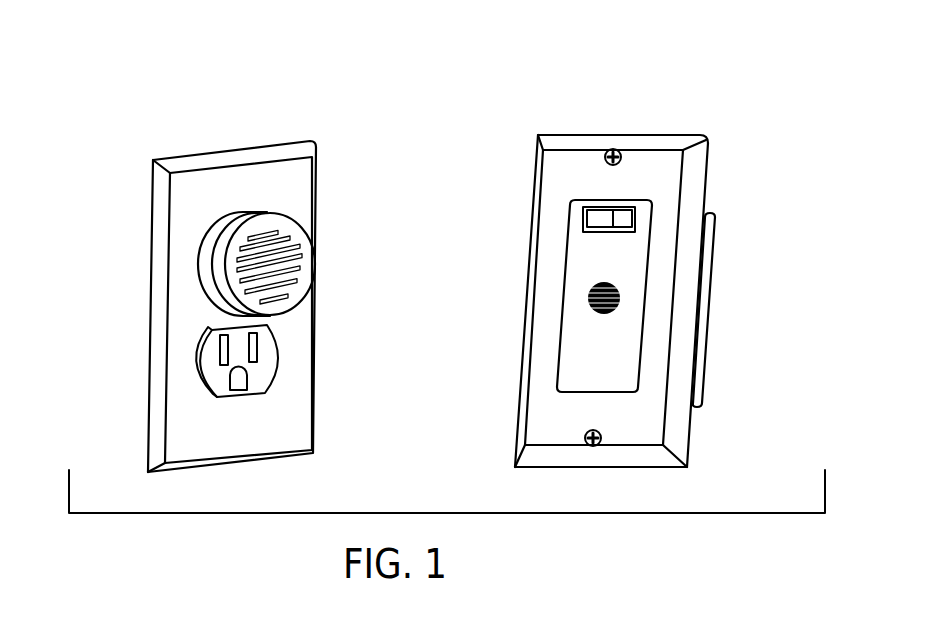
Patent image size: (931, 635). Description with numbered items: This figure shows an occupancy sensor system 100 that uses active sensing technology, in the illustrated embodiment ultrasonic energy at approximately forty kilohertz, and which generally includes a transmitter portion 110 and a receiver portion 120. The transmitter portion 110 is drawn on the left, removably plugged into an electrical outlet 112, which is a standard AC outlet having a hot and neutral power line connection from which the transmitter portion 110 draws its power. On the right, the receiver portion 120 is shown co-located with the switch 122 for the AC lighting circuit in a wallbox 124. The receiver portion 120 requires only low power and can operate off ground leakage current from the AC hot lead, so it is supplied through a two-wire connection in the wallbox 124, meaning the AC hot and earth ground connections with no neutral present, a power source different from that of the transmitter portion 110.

The occupancy sensor system 100 is at (280, 70).
The transmitter portion 110 is at (315, 270).
The electrical outlet 112 is at (197, 258).
The receiver portion 120 is at (620, 302).
The switch 122 is at (630, 209).
The wallbox 124 is at (714, 238).